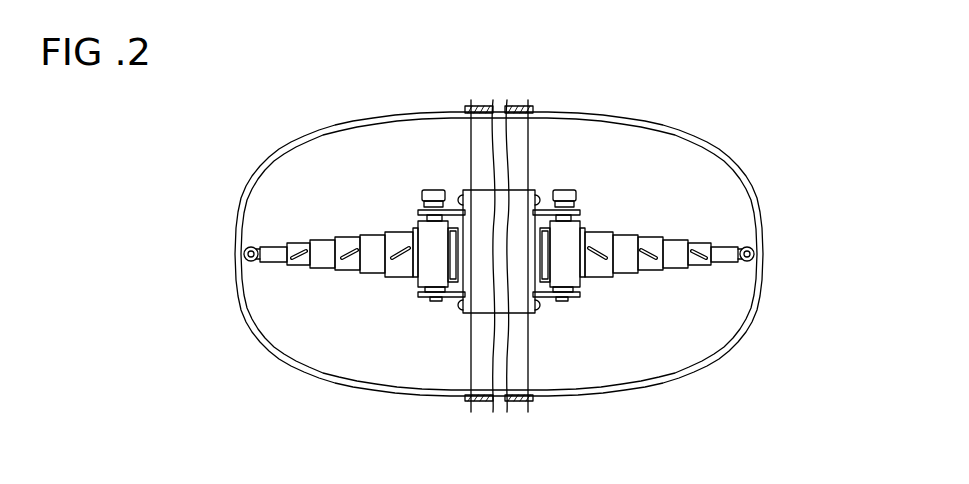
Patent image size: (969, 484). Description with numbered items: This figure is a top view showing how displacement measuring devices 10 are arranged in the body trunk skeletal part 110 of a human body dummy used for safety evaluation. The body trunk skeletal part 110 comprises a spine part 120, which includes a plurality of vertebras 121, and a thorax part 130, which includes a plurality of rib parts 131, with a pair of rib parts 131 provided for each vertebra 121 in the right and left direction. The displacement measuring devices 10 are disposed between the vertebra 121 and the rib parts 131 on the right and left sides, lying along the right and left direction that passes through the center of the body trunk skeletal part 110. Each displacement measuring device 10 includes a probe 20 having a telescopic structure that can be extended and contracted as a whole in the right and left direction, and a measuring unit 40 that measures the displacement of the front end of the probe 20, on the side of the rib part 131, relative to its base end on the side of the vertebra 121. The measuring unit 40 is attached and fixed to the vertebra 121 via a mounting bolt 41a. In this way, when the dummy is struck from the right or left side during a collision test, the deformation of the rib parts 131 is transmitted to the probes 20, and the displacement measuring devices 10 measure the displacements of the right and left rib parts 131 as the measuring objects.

The displacement measuring device 10 is at (499, 262).
The probe 20 is at (325, 277).
The measuring unit 40 is at (433, 305).
The mounting bolt 41a is at (463, 303).
The body trunk skeletal part 110 is at (493, 254).
The spine part 120 is at (455, 182).
The vertebra 121 is at (520, 180).
The thorax part 130 is at (750, 328).
The rib part 131 is at (758, 277).